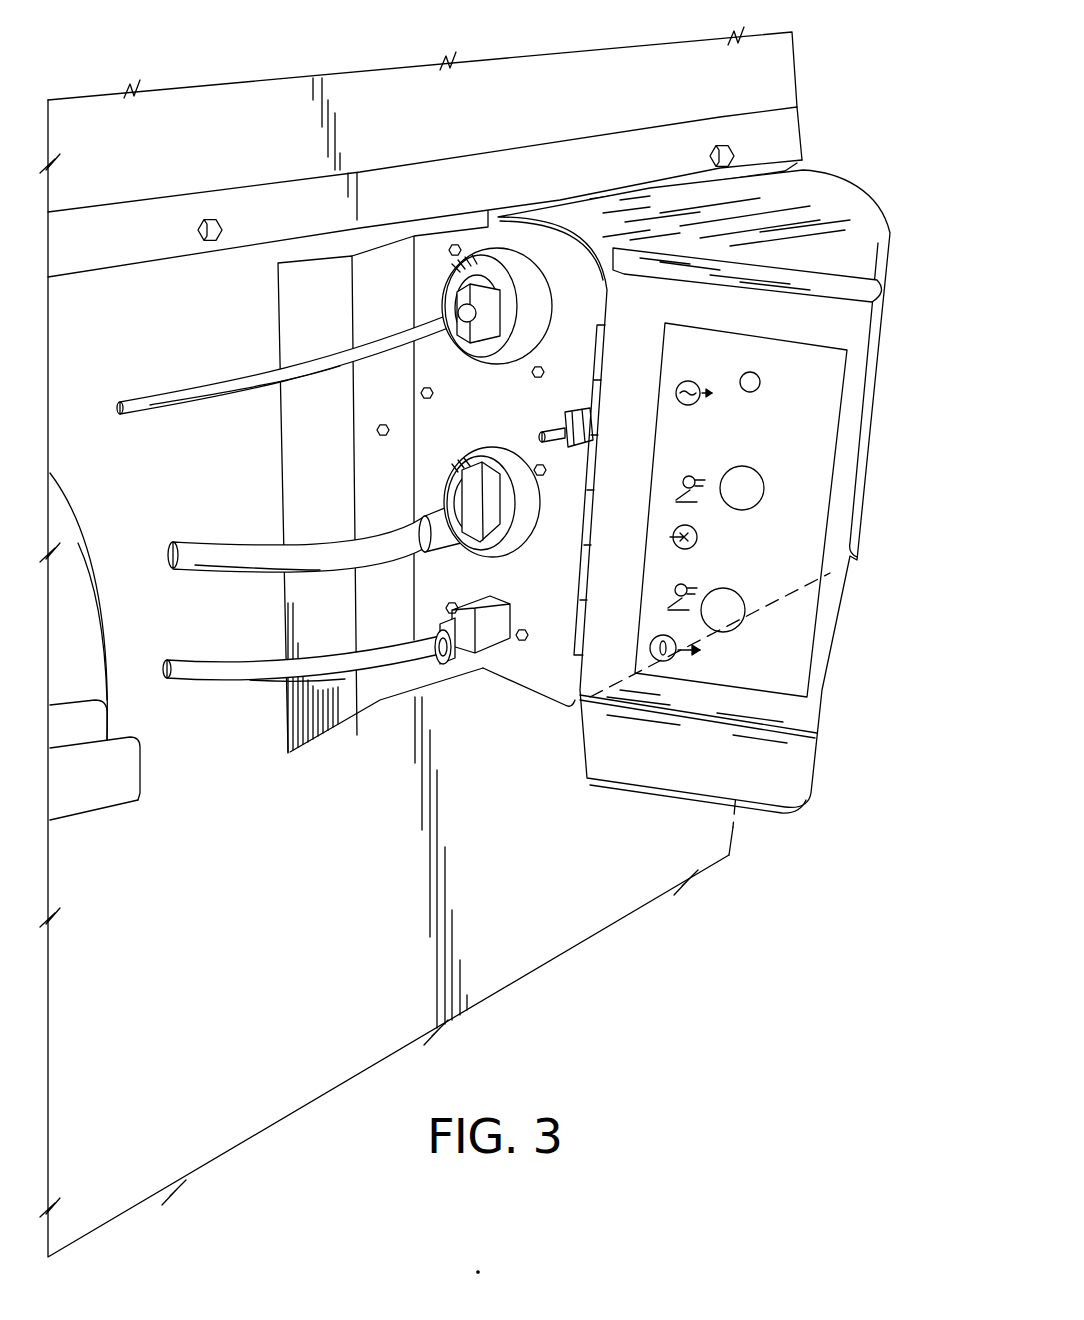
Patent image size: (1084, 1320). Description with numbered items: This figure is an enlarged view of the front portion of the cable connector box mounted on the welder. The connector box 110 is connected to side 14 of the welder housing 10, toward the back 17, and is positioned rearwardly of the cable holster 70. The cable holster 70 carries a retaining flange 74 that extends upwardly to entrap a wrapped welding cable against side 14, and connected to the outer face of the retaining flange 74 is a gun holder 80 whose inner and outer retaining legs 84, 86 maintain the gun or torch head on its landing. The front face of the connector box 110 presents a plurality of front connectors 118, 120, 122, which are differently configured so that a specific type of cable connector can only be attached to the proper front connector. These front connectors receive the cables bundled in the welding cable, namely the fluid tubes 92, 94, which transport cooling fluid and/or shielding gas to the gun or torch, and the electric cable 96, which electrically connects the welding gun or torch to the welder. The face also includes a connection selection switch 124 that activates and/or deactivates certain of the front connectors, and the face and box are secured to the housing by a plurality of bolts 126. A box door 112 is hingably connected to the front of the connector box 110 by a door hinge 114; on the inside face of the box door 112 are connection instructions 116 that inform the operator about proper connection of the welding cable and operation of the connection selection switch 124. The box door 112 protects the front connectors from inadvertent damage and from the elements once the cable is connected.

The welder housing 10 is at (205, 85).
The side 14 is at (478, 85).
The back 17 is at (795, 55).
The cable holster 70 is at (67, 488).
The retaining flange 74 is at (75, 548).
The gun holder 80 is at (86, 815).
The retaining leg 84 is at (93, 723).
The retaining leg 86 is at (107, 793).
The fluid tube 92 is at (235, 680).
The fluid tube 94 is at (228, 545).
The electric cable 96 is at (205, 396).
The connector box 110 is at (883, 222).
The box door 112 is at (800, 707).
The door hinge 114 is at (613, 336).
The connection instructions 116 is at (808, 472).
The front connector 118 is at (513, 275).
The front connector 120 is at (493, 462).
The front connector 122 is at (488, 640).
The connection selection switch 124 is at (555, 447).
The bolts 126 is at (543, 368).